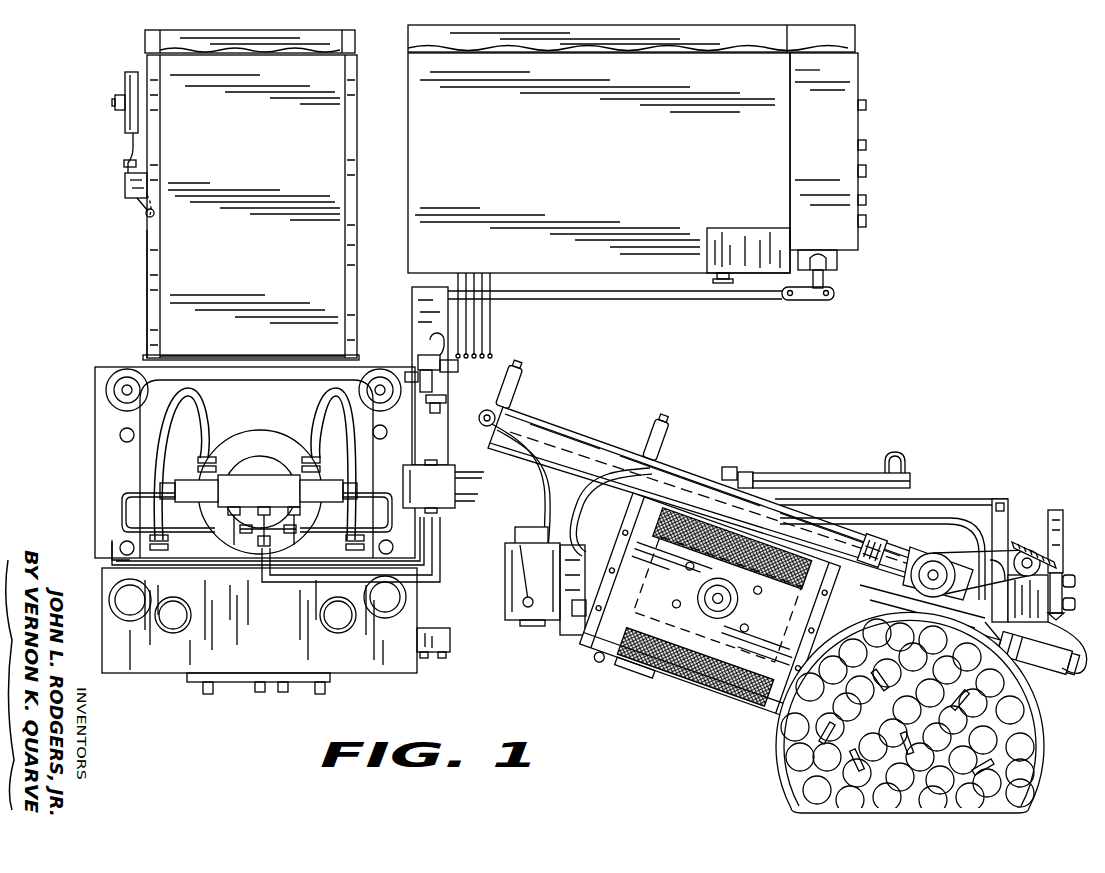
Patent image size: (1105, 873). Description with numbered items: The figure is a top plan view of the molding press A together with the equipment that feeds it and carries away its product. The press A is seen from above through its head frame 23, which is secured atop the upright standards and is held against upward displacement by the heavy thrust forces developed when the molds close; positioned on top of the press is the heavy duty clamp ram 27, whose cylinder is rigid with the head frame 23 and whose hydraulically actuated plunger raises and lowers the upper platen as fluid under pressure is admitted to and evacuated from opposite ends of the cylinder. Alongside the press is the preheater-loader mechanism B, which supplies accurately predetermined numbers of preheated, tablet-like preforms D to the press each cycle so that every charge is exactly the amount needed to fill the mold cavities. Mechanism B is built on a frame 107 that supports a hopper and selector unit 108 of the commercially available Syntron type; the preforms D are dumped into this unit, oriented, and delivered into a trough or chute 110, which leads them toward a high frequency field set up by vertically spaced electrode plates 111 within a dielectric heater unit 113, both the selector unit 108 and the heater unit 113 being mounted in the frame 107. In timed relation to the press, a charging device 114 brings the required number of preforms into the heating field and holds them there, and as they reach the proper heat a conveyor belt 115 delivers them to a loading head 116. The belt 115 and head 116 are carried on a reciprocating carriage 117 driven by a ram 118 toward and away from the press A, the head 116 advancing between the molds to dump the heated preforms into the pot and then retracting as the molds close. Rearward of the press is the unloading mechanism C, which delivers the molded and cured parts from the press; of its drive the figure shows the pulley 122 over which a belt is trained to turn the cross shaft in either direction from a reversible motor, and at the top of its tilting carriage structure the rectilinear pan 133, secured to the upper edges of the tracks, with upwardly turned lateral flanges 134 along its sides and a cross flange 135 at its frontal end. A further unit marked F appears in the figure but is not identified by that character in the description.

The head frame 23 is at (95, 430).
The clamp ram 27 is at (241, 438).
The frame 107 is at (960, 499).
The hopper and selector unit 108 is at (776, 732).
The trough or chute 110 is at (1013, 547).
The electrode plates 111 is at (652, 674).
The dielectric heater unit 113 is at (585, 647).
The charging device 114 is at (898, 512).
The conveyor belt 115 is at (470, 495).
The loading head 116 is at (422, 465).
The reciprocating carriage 117 is at (727, 468).
The ram 118 is at (811, 474).
The pulley 122 is at (128, 128).
The rectilinear pan 133 is at (268, 252).
The lateral margins or flanges 134 is at (167, 293).
The cross flange 135 is at (228, 353).
The press A is at (95, 463).
The preheater-loader mechanism B is at (605, 666).
The unloading mechanism C is at (146, 253).
The preforms D is at (842, 783).
The reservoir tank F is at (618, 165).